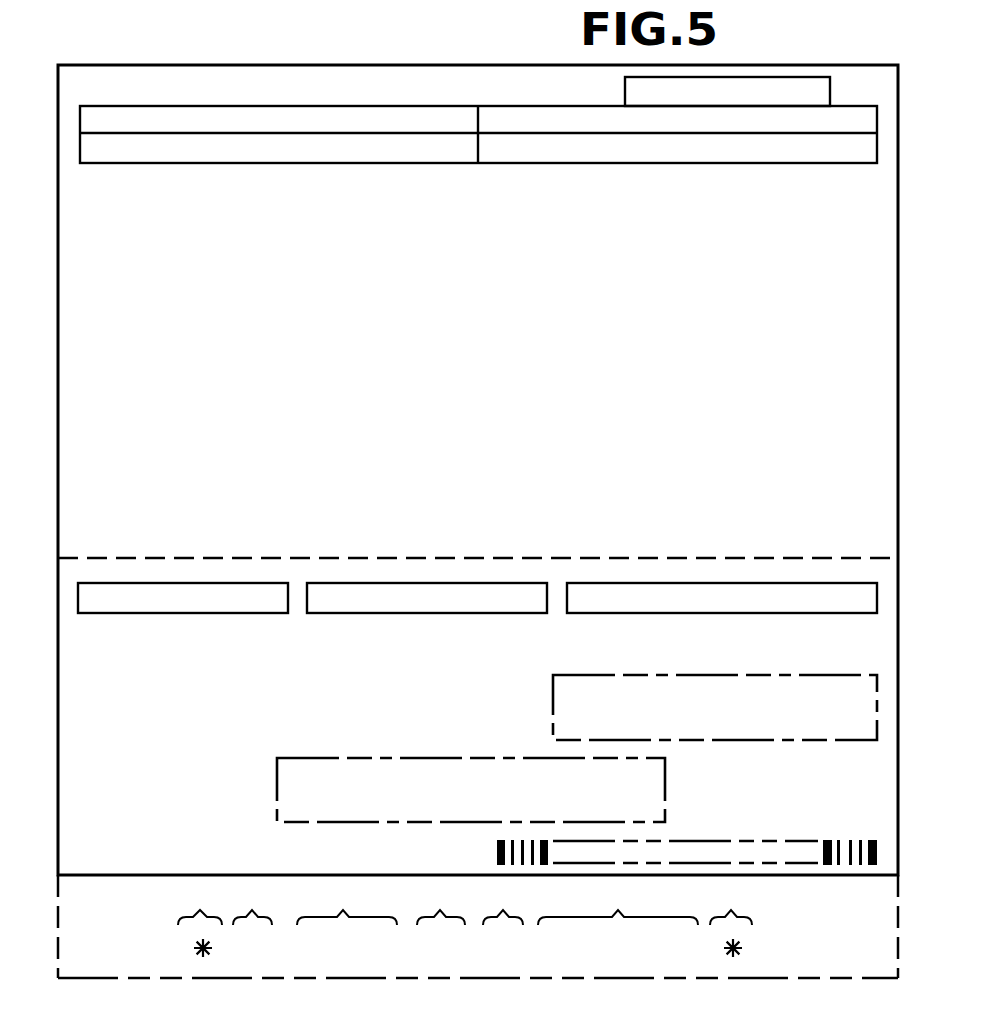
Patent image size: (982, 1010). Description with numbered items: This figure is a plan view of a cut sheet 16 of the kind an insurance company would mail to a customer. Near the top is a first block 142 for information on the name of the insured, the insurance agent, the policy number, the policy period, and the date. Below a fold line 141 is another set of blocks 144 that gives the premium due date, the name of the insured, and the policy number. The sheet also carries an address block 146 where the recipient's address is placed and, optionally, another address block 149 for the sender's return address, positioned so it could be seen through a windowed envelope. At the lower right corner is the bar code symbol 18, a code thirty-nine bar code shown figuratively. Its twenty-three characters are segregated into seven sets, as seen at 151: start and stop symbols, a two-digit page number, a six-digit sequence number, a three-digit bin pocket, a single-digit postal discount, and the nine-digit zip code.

The sheet 16 is at (138, 65).
The first block 142 is at (407, 165).
The fold line 141 is at (193, 556).
The set of blocks 144 is at (250, 613).
The address block 149 is at (552, 688).
The address block 146 is at (300, 758).
The bar code symbol 18 is at (828, 842).
The sets of characters 151 is at (168, 940).